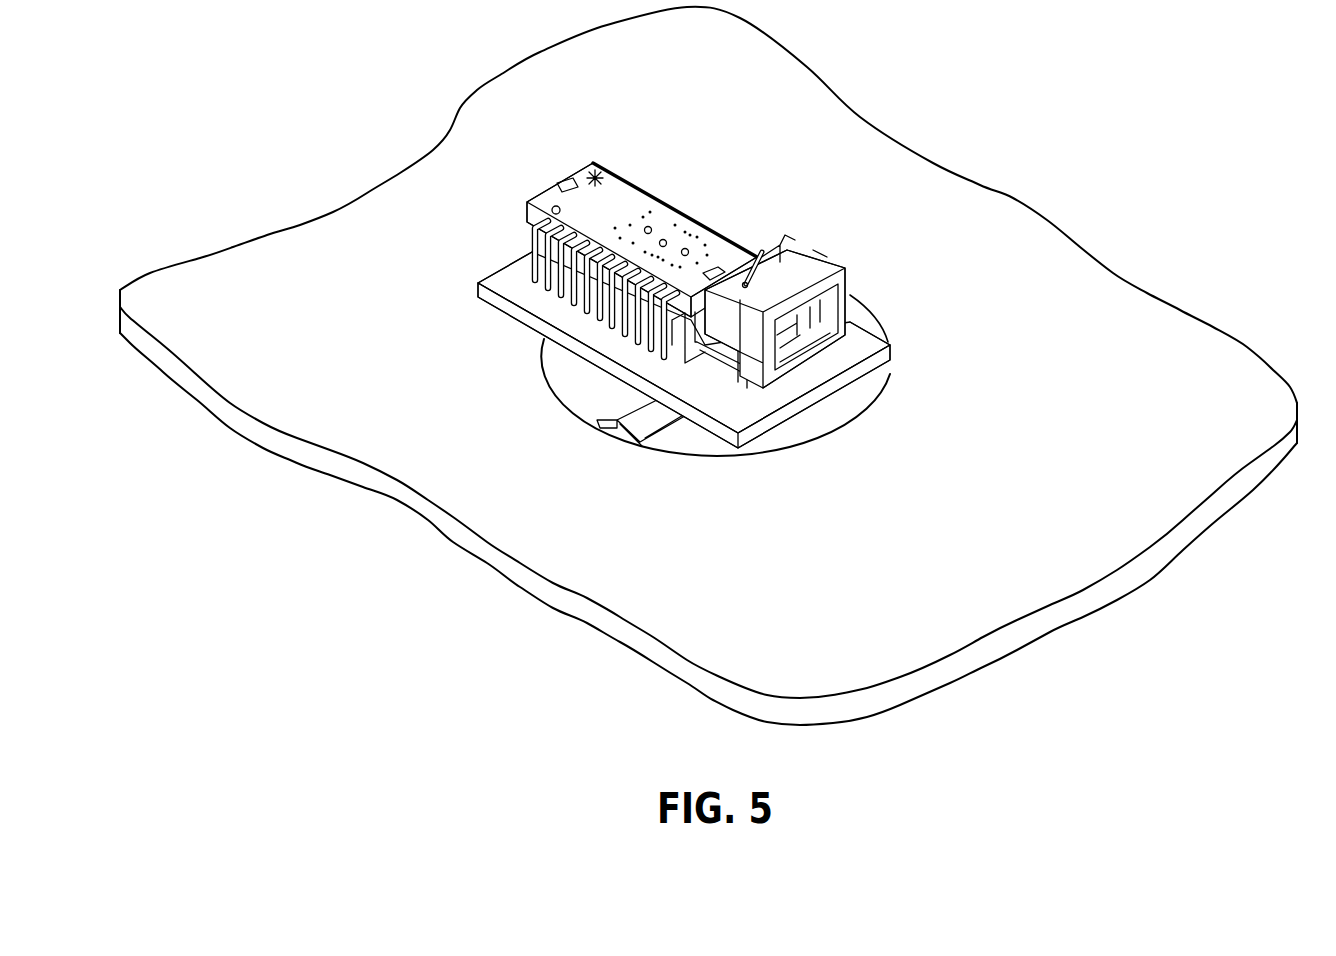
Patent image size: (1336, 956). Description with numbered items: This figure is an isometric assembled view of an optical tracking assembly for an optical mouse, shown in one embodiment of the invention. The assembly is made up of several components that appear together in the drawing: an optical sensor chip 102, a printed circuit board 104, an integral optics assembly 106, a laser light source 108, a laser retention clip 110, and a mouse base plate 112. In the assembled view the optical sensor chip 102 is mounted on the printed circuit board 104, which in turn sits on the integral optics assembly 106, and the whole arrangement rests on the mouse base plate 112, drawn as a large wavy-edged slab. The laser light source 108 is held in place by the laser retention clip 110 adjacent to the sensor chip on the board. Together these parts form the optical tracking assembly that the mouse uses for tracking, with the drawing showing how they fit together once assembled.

The optical sensor chip 102 is at (635, 182).
The printed circuit board 104 is at (897, 347).
The integral optics assembly 106 is at (680, 337).
The laser light source 108 is at (740, 264).
The laser retention clip 110 is at (822, 264).
The mouse base plate 112 is at (860, 115).